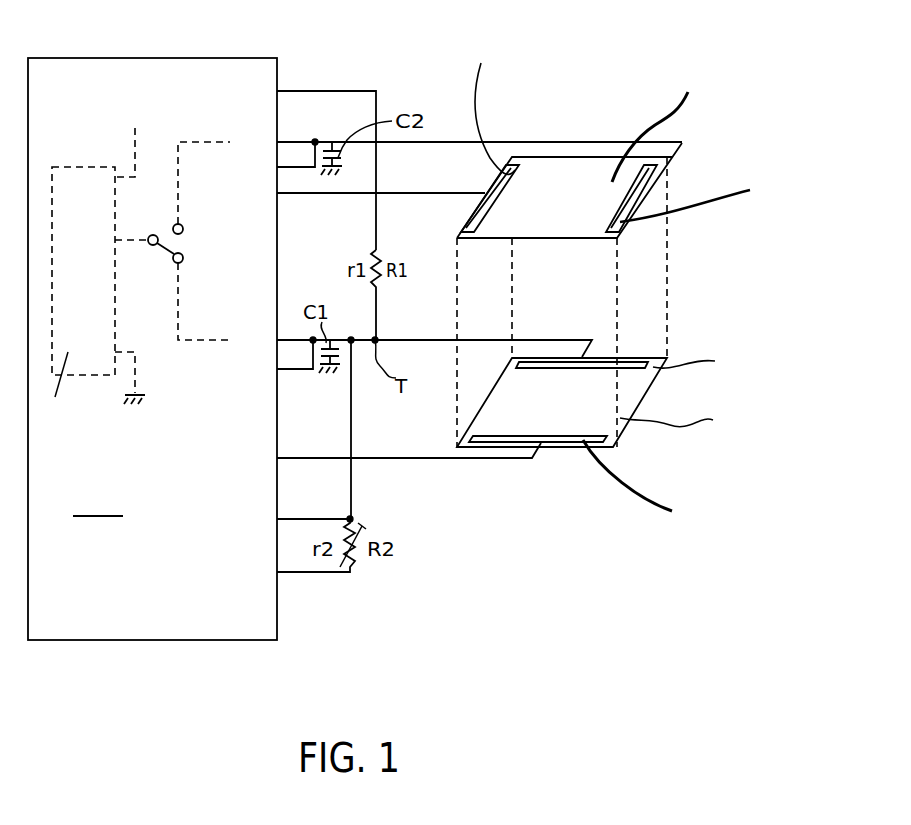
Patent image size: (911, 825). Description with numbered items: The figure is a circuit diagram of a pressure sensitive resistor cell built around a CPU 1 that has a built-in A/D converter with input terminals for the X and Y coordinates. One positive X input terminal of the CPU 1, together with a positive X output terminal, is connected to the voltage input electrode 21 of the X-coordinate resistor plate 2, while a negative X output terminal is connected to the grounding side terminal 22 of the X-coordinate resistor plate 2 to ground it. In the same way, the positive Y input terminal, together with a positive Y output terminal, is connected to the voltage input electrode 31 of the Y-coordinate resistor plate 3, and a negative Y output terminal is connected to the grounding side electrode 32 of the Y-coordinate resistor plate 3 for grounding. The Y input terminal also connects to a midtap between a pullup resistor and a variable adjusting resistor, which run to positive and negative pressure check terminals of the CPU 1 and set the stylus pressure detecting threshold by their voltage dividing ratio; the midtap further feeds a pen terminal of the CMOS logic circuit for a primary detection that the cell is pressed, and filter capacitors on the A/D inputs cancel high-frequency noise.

The CPU 1 is at (152, 83).
The X-coordinate resistor plate 2 is at (602, 172).
The voltage input electrode 21 is at (633, 212).
The grounding side terminal 22 is at (507, 170).
The Y-coordinate resistor plate 3 is at (628, 398).
The voltage input electrode 31 is at (637, 356).
The grounding side electrode 32 is at (572, 438).